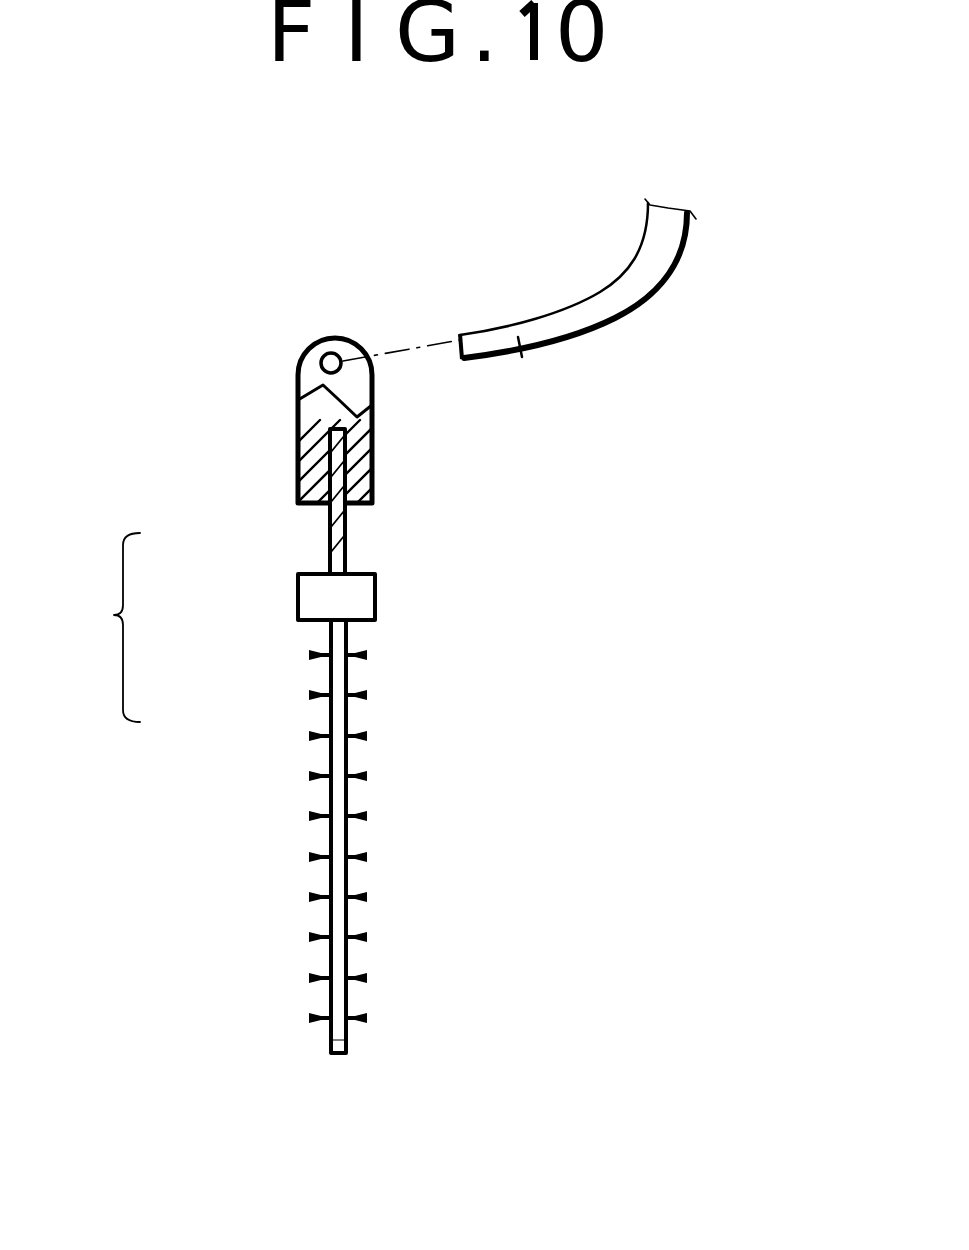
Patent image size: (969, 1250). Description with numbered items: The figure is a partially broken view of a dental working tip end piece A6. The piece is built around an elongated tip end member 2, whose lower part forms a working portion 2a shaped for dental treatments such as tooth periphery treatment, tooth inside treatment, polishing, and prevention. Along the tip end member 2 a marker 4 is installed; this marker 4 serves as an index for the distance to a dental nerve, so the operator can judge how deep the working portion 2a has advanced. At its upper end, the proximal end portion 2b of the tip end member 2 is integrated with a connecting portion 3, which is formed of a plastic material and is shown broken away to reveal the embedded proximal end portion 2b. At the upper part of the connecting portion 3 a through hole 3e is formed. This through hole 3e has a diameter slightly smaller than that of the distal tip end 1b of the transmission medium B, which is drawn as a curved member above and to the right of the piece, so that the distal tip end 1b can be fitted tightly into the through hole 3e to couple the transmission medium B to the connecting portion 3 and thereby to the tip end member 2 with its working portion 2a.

The transmission medium B is at (708, 266).
The distal tip end 1b is at (522, 357).
The connecting portion 3 is at (298, 453).
The through hole 3e is at (328, 359).
The proximal end portion 2b is at (350, 470).
The marker 4 is at (353, 598).
The tip end member 2 is at (331, 762).
The working portion 2a is at (338, 1006).
The dental working tip end piece A6 is at (96, 627).